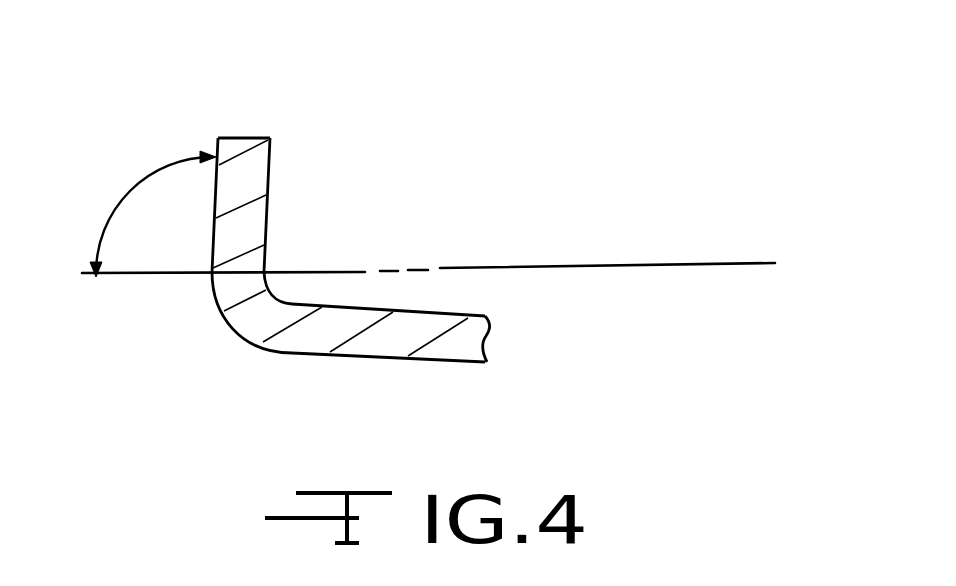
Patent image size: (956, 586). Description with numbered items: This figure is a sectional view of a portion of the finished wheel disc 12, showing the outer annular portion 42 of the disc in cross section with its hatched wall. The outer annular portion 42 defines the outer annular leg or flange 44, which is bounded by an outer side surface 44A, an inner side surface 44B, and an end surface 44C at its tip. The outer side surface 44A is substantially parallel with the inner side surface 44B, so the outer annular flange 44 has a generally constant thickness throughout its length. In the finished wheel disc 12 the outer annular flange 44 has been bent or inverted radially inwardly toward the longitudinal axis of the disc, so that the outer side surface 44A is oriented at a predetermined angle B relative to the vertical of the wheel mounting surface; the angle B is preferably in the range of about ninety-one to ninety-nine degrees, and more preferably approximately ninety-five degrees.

The finished wheel disc 12 is at (397, 358).
The outer annular portion 42 is at (313, 357).
The outer annular flange 44 is at (262, 196).
The outer side surface 44A is at (217, 147).
The inner side surface 44B is at (268, 195).
The end surface 44C is at (245, 137).
The angle B is at (133, 187).